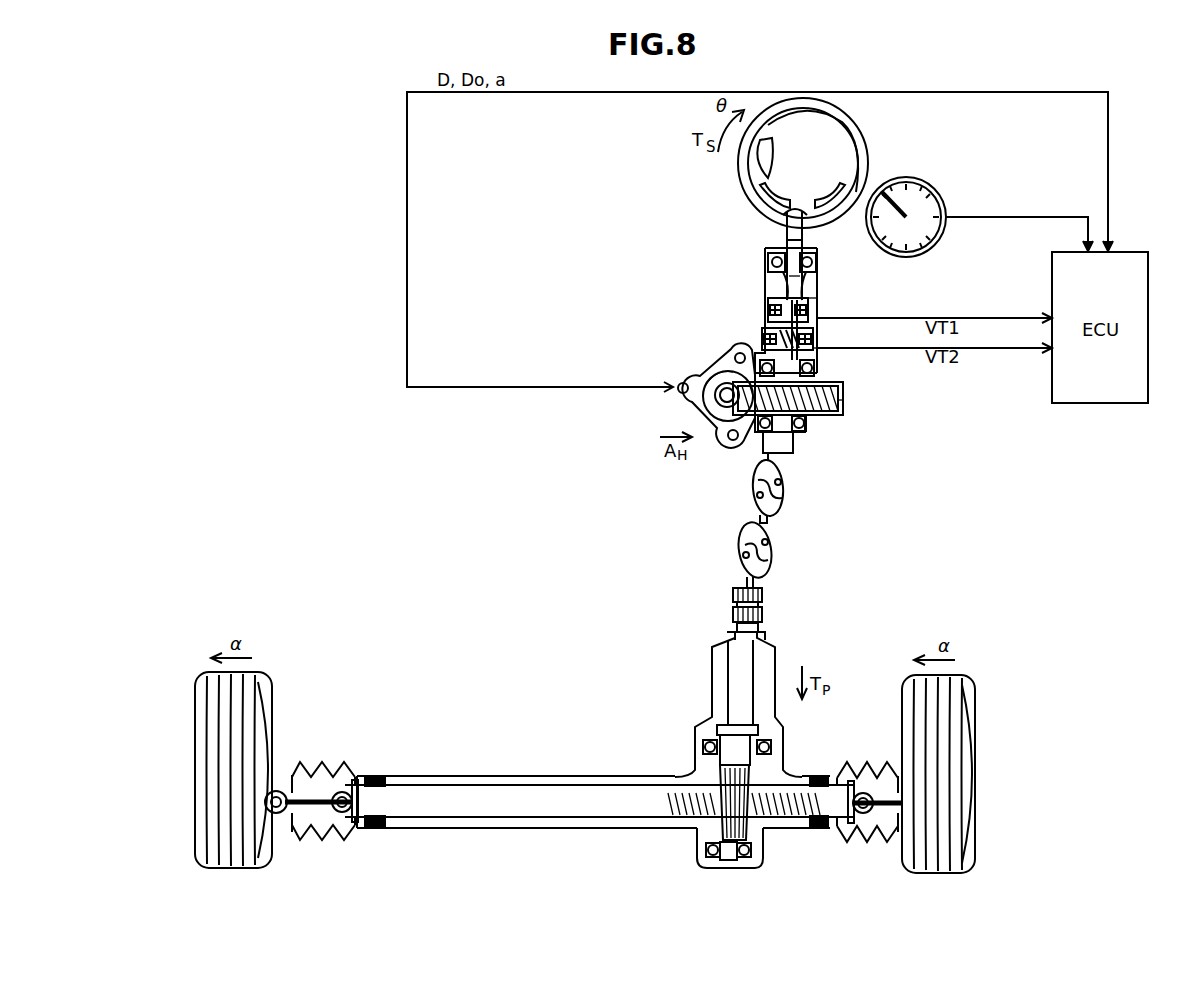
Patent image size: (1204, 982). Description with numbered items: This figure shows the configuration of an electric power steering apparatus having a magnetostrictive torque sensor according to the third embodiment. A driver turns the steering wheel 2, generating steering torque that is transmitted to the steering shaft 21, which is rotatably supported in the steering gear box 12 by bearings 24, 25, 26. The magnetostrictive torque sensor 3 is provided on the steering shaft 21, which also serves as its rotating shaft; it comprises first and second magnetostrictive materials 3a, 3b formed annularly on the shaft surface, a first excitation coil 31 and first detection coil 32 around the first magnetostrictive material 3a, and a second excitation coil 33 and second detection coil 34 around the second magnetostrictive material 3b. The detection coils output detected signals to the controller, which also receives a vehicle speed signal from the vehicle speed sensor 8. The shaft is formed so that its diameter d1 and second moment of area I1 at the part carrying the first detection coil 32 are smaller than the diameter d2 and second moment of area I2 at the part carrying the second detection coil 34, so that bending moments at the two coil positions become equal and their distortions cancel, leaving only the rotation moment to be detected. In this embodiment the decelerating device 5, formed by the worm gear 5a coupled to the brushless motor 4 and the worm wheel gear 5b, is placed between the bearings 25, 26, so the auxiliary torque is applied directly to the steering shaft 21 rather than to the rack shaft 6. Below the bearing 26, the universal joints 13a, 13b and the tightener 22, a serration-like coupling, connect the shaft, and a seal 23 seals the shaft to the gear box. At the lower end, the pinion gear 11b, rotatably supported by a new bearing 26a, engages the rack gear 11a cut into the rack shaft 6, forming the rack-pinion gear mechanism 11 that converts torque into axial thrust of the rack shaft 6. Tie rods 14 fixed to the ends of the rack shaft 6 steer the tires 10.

The steering wheel 2 is at (858, 140).
The magnetostrictive torque sensor 3 is at (712, 212).
The first magnetostrictive material 3a is at (768, 268).
The second magnetostrictive material 3b is at (762, 357).
The brushless motor 4 is at (680, 379).
The decelerating device 5 is at (580, 408).
The worm gear 5a is at (712, 404).
The worm wheel gear 5b is at (733, 415).
The rack shaft 6 is at (518, 803).
The vehicle speed sensor 8 is at (912, 182).
The tire 10 is at (262, 852).
The rack-pinion gear mechanism 11 is at (822, 842).
The rack gear 11a is at (772, 818).
The pinion gear 11b is at (768, 853).
The steering gear box 12 is at (446, 842).
The universal joint 13a is at (760, 478).
The universal joint 13b is at (770, 543).
The tie rod 14 is at (308, 797).
The steering shaft 21 is at (782, 245).
The tightener 22 is at (734, 613).
The seal 23 is at (762, 628).
The bearing 24 is at (818, 262).
The bearing 25 is at (843, 392).
The bearing 26 is at (805, 430).
The bearing 26a is at (700, 745).
The first excitation coil 31 is at (772, 282).
The first detection coil 32 is at (775, 298).
The second excitation coil 33 is at (770, 312).
The second detection coil 34 is at (768, 334).
The diameter d1 is at (818, 278).
The second moment of area I1 is at (818, 300).
The second moment of area I2 is at (818, 357).
The diameter d2 is at (843, 404).